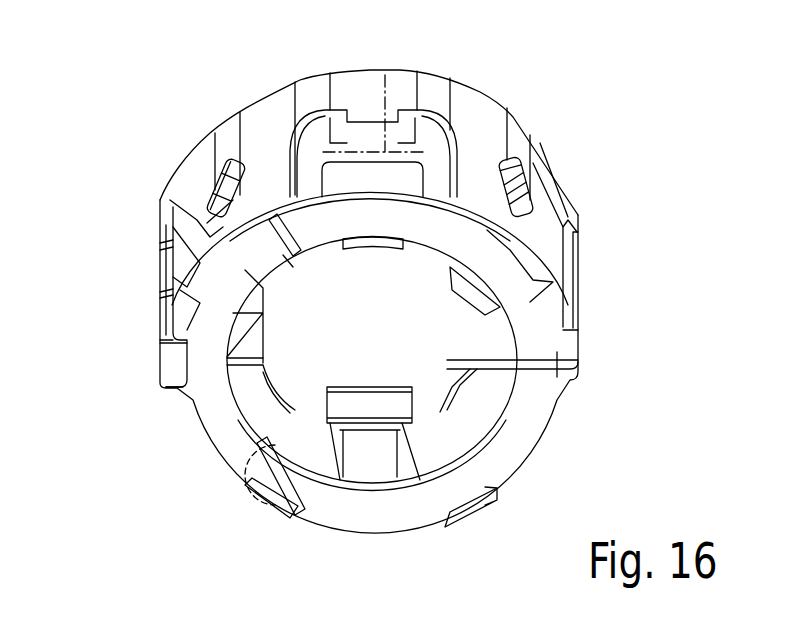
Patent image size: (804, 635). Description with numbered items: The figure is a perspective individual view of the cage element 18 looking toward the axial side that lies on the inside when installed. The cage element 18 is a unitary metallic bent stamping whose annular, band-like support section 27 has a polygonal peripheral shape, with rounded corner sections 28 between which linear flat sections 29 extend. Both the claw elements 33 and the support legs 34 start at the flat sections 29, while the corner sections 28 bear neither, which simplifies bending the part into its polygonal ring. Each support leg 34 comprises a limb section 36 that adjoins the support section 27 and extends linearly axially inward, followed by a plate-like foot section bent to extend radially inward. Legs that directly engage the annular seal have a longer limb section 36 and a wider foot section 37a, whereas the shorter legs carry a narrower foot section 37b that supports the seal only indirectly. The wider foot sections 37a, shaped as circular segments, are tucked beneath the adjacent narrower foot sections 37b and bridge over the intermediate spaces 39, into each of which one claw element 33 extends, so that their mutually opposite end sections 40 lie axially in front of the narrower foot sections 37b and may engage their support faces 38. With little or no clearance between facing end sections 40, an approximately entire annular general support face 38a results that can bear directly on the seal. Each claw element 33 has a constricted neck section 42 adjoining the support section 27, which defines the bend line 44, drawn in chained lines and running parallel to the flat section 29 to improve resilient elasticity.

The cage element 18 is at (166, 191).
The support section 27 is at (529, 123).
The corner sections 28 is at (317, 93).
The flat sections 29 is at (273, 107).
The claw elements 33 is at (235, 413).
The support legs 34 is at (273, 203).
The limb section 36 is at (263, 173).
The wider foot sections 37a is at (503, 270).
The narrower foot sections 37b is at (300, 470).
The support faces 38 is at (316, 512).
The general support face 38a is at (407, 515).
The intermediate spaces 39 is at (483, 123).
The end sections 40 is at (307, 233).
The neck section 42 is at (480, 203).
The bend line 44 is at (385, 150).